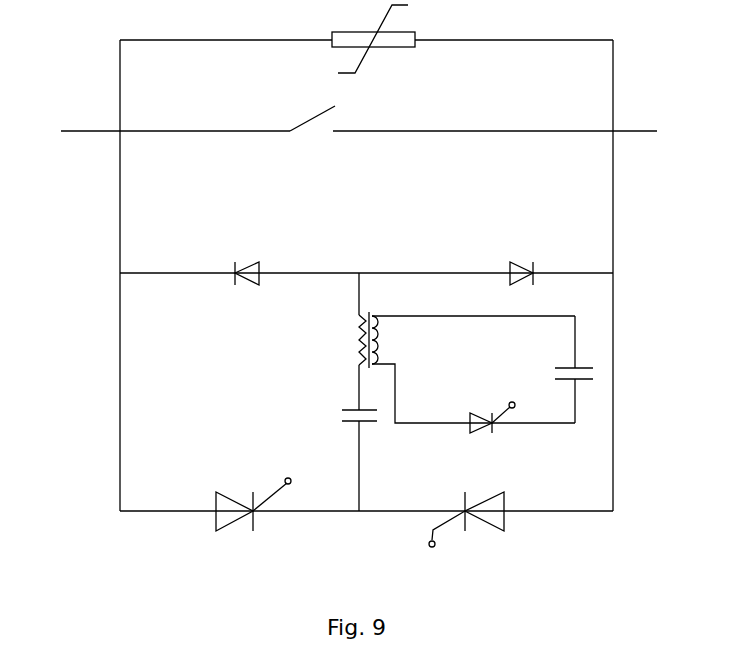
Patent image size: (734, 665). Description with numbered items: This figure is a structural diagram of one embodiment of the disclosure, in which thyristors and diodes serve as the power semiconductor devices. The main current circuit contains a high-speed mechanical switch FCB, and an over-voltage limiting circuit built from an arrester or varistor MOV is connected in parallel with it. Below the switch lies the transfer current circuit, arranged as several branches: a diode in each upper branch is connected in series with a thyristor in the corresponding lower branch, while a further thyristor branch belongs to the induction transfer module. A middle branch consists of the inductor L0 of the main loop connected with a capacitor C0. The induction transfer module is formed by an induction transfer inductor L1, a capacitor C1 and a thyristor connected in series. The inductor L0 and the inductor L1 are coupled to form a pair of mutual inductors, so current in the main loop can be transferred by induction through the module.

The varistor over-voltage limiting circuit MOV is at (383, 48).
The high-speed mechanical switch FCB is at (359, 133).
The power semiconductor device diode is at (379, 255).
The inductor of the main loop L0 is at (344, 340).
The induction transfer inductor L1 is at (473, 369).
The capacitor C0 is at (352, 432).
The capacitor C1 is at (567, 369).
The power semiconductor device thyristor is at (367, 464).